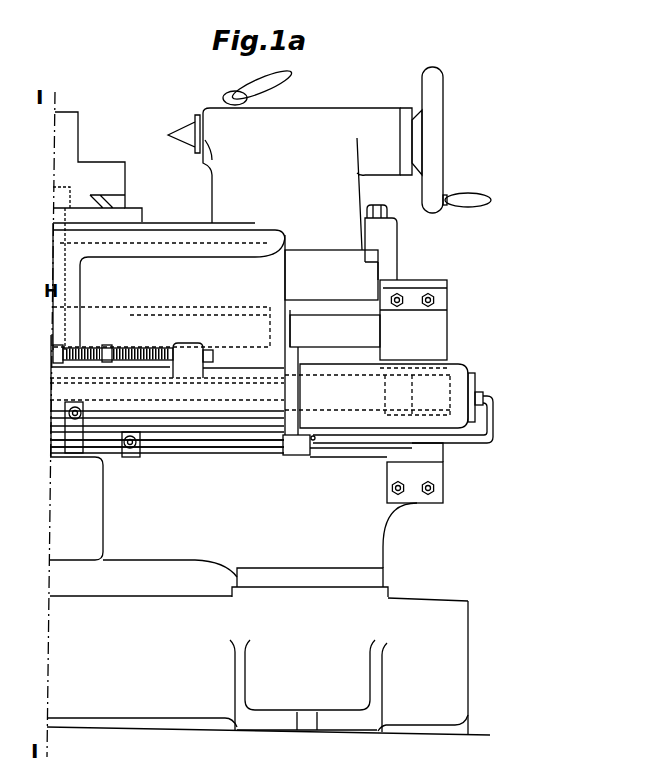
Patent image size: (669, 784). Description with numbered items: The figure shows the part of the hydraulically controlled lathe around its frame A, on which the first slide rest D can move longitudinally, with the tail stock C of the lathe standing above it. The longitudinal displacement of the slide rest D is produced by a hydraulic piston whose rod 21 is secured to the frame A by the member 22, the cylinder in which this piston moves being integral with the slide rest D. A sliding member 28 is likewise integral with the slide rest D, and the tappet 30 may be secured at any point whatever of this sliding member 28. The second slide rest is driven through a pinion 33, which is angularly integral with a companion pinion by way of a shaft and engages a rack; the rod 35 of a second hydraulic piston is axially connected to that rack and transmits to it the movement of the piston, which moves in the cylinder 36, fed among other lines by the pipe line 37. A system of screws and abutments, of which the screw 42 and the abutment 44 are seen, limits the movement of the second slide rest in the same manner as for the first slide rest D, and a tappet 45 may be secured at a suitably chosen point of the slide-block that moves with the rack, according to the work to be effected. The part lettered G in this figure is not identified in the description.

The rod of the hydraulic piston 21 is at (335, 331).
The member 22 is at (437, 300).
The sliding member 28 is at (240, 443).
The tappet 30 is at (128, 452).
The pinion 33 is at (68, 387).
The rod of the hydraulic piston 35 is at (384, 396).
The cylinder 36 is at (468, 383).
The pipe line 37 is at (493, 418).
The screw 42 is at (119, 347).
The abutment 44 is at (193, 360).
The tappet 45 is at (75, 446).
The frame A is at (259, 529).
The tail stock C is at (329, 158).
The first slide rest D is at (169, 329).
The base G is at (268, 668).